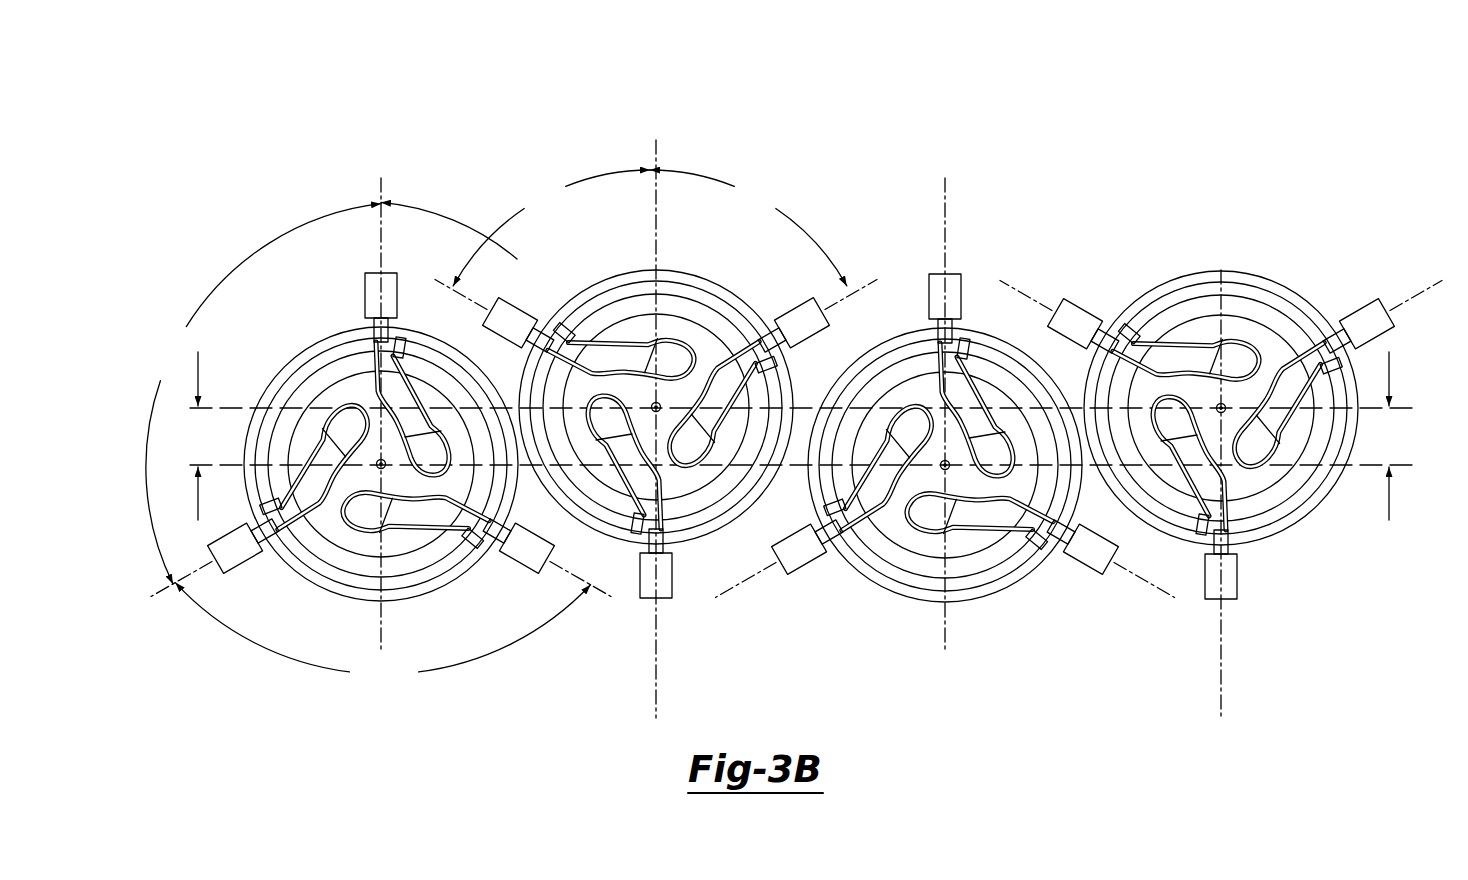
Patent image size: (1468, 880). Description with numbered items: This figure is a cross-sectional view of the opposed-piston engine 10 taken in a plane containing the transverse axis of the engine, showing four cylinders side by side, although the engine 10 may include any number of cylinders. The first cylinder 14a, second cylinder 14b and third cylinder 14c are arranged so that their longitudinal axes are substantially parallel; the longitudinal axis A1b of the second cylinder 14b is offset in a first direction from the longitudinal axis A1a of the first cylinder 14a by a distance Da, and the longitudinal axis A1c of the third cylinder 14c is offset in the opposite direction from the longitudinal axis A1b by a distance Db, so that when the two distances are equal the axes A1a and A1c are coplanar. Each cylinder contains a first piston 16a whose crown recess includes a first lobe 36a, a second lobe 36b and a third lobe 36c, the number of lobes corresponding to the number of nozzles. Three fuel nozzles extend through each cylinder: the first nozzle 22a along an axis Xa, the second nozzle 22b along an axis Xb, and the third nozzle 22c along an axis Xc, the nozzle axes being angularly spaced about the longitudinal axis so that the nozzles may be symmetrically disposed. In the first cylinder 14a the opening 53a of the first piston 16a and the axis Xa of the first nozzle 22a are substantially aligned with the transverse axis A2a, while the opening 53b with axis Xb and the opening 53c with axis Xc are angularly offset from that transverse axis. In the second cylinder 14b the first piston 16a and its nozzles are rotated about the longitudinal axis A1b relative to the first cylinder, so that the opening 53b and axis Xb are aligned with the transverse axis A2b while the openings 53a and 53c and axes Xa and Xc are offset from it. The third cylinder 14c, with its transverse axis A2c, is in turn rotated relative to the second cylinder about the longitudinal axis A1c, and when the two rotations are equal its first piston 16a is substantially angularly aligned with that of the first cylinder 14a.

The engine 10 is at (265, 147).
The first cylinder 14a is at (288, 378).
The second cylinder 14b is at (702, 283).
The third cylinder 14c is at (983, 342).
The first piston 16a is at (323, 378).
The first nozzle 22a is at (366, 290).
The second nozzle 22b is at (520, 568).
The third nozzle 22c is at (232, 572).
The first lobe 36a is at (403, 403).
The second lobe 36b is at (398, 514).
The third lobe 36c is at (305, 488).
The opening of the first piston 53a is at (394, 340).
The opening of the first piston 53b is at (470, 538).
The opening of the first piston 53c is at (274, 512).
The longitudinal axis of the first cylinder A1a is at (386, 468).
The transverse axis of the first cylinder A2a is at (380, 614).
The longitudinal axis of the second cylinder A1b is at (660, 412).
The transverse axis of the second cylinder A2b is at (652, 160).
The longitudinal axis of the third cylinder A1c is at (950, 470).
The transverse axis of the third cylinder A2c is at (940, 648).
The axis of the first nozzle Xa is at (376, 186).
The axis of the second nozzle Xb is at (600, 598).
The axis of the third nozzle Xc is at (436, 276).
The distance Da is at (200, 436).
The distance Db is at (1383, 436).